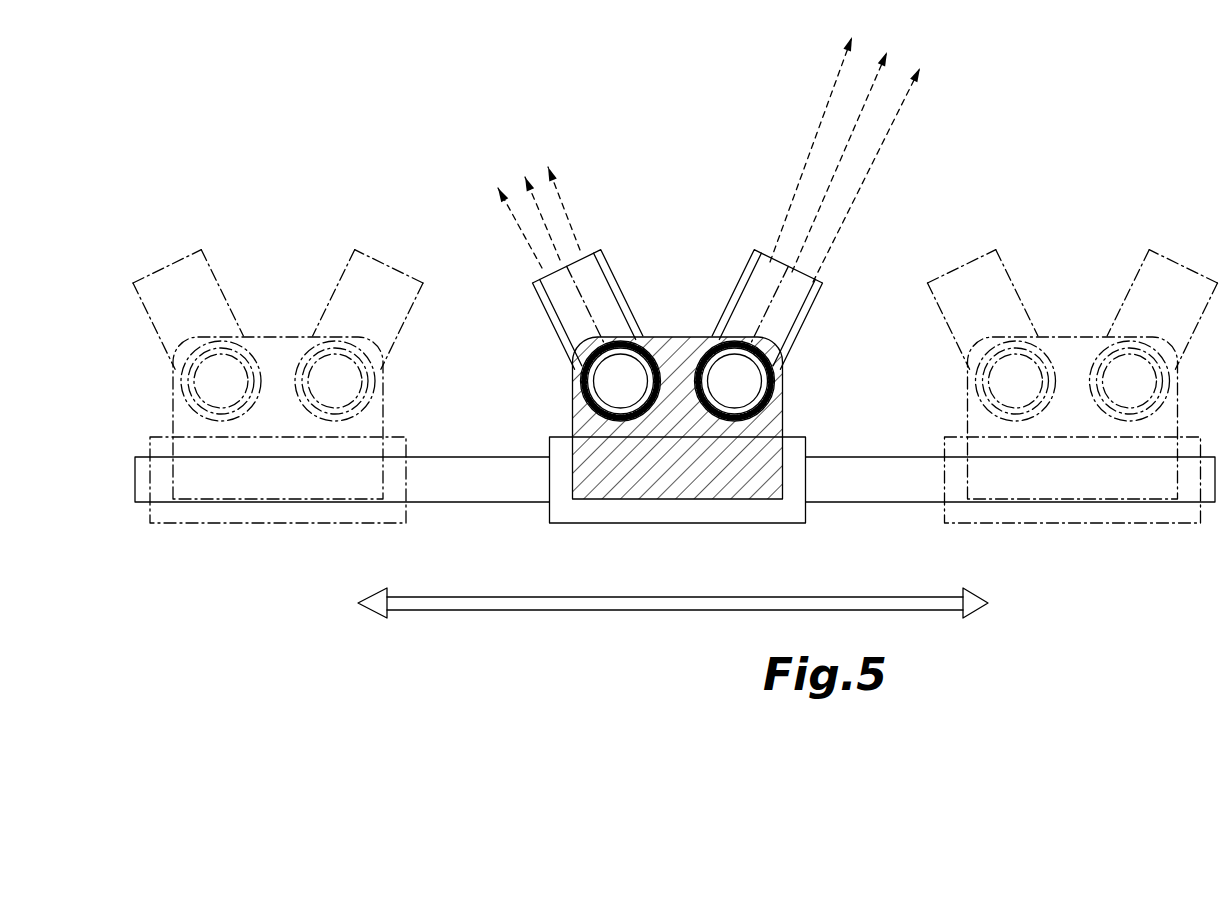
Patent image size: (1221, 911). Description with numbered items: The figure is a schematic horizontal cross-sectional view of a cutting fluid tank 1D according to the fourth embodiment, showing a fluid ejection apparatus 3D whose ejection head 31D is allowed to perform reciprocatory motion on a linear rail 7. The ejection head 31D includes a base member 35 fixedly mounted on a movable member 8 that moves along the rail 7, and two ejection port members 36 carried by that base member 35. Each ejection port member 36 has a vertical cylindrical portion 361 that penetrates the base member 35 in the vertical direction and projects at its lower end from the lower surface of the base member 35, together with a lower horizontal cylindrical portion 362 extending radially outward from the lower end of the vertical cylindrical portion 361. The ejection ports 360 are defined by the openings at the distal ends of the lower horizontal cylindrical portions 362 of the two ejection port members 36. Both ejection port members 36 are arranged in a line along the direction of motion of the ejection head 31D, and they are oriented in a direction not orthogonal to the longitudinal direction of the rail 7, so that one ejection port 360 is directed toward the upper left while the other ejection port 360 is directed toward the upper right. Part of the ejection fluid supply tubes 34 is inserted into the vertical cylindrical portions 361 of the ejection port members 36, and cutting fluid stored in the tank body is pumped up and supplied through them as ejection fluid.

The cutting fluid tank 1D is at (1102, 120).
The fluid ejection apparatus 3D is at (630, 160).
The linear rail 7 is at (873, 500).
The movable member 8 is at (275, 523).
The ejection head 31D is at (173, 470).
The ejection fluid supply tube 34 is at (599, 402).
The base member 35 is at (283, 336).
The ejection port member 36 is at (213, 270).
The ejection port 360 is at (198, 250).
The vertical cylindrical portion 361 is at (580, 383).
The lower horizontal cylindrical portion 362 is at (550, 318).